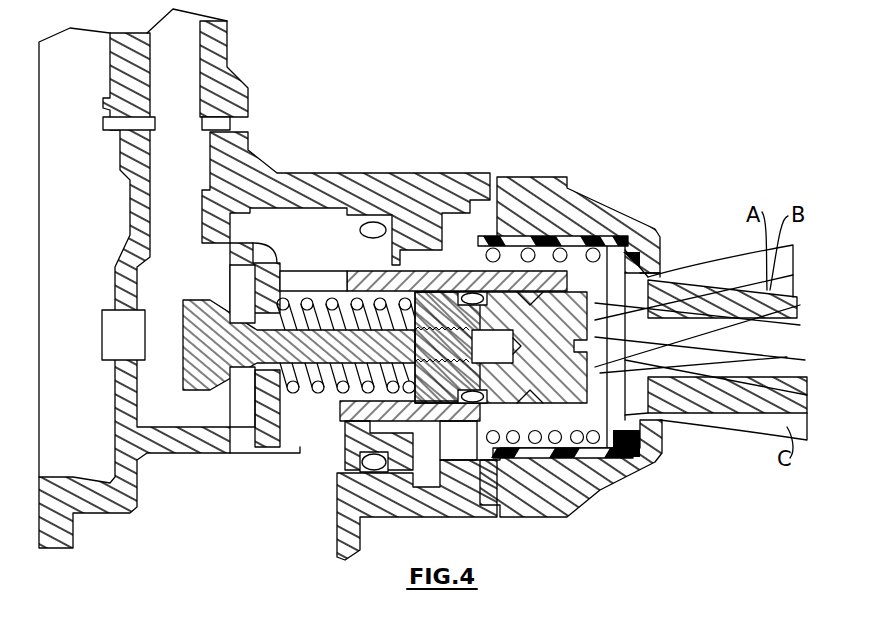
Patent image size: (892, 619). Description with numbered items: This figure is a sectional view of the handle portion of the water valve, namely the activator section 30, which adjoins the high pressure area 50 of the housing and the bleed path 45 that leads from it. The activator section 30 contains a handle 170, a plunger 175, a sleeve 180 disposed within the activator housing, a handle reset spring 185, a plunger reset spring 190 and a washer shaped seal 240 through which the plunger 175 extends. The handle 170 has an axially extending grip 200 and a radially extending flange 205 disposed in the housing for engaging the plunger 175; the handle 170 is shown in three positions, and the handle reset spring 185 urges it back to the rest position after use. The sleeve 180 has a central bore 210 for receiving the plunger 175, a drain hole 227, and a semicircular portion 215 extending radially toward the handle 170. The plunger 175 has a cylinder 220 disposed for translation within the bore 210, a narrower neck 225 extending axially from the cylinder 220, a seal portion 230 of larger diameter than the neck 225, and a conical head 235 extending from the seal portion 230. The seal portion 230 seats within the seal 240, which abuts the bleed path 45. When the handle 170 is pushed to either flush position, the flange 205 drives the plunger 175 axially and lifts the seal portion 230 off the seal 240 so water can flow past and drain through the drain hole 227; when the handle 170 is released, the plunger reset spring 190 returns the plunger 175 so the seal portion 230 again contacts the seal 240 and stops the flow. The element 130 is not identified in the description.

The activator section 30 is at (600, 133).
The bleed path 45 is at (180, 78).
The high pressure area 50 is at (134, 288).
The seal member 130 is at (120, 330).
The handle 170 is at (742, 440).
The plunger 175 is at (428, 395).
The sleeve 180 is at (397, 278).
The handle reset spring 185 is at (486, 255).
The plunger reset spring 190 is at (243, 405).
The grip 200 is at (757, 297).
The flange 205 is at (633, 247).
The central bore 210 is at (403, 278).
The semicircular portion 215 is at (575, 483).
The cylinder 220 is at (508, 420).
The neck 225 is at (312, 392).
The drain hole 227 is at (292, 392).
The seal portion 230 is at (236, 300).
The conical head 235 is at (195, 352).
The seal 240 is at (240, 397).